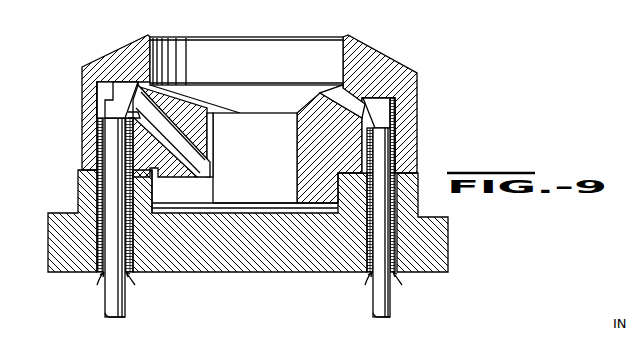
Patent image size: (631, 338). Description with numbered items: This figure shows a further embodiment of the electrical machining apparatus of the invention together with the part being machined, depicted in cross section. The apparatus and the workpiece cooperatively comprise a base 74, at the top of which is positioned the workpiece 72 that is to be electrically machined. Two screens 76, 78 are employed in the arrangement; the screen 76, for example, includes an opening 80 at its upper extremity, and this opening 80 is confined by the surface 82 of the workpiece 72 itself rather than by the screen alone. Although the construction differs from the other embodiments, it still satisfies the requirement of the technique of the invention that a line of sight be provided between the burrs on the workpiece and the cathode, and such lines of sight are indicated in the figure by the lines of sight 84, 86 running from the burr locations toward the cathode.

The workpiece 72 is at (386, 52).
The base 74 is at (47, 250).
The screen 76 is at (100, 107).
The screen 78 is at (394, 122).
The opening 80 is at (100, 88).
The surface 82 is at (126, 118).
The line of sight 84 is at (133, 117).
The line of sight 86 is at (137, 117).